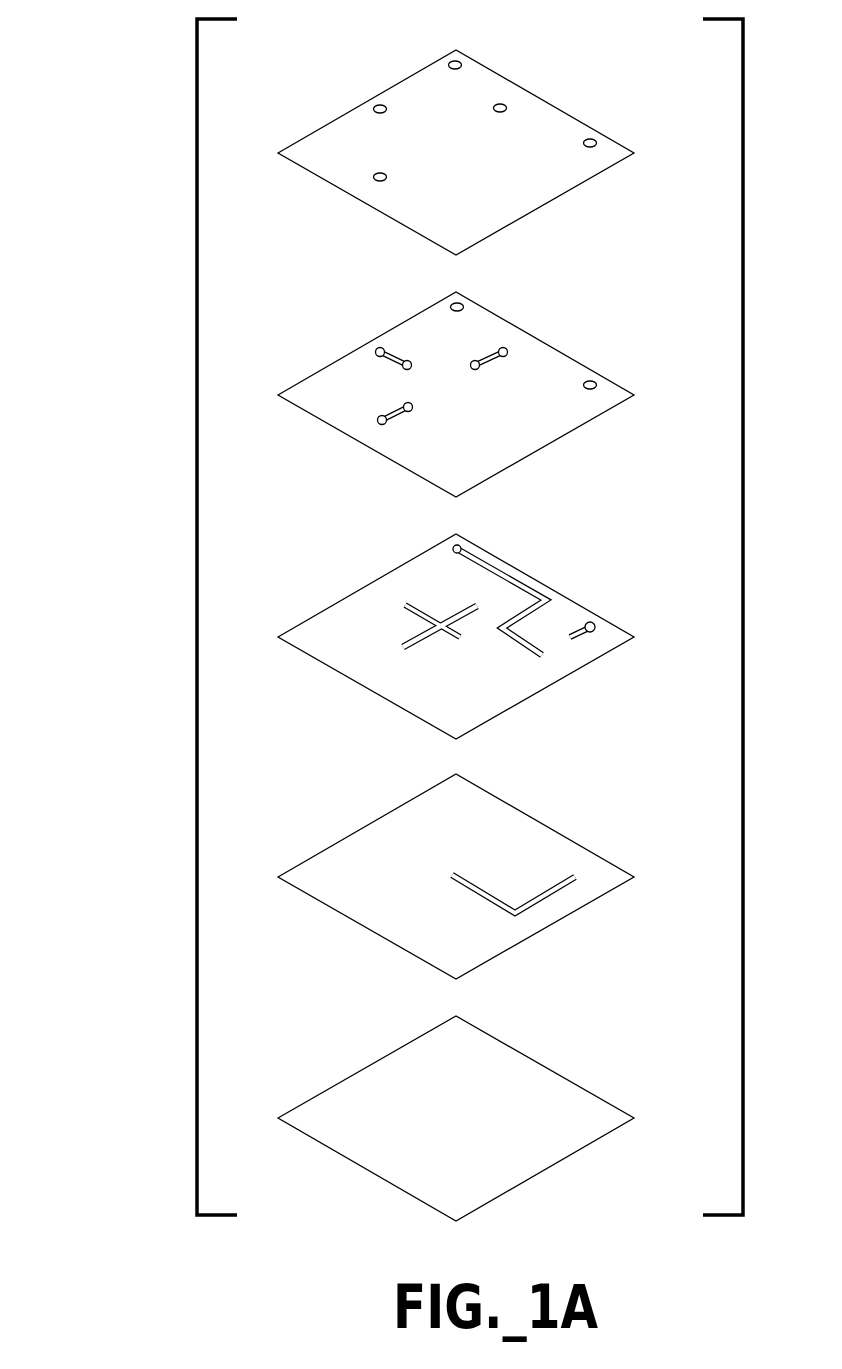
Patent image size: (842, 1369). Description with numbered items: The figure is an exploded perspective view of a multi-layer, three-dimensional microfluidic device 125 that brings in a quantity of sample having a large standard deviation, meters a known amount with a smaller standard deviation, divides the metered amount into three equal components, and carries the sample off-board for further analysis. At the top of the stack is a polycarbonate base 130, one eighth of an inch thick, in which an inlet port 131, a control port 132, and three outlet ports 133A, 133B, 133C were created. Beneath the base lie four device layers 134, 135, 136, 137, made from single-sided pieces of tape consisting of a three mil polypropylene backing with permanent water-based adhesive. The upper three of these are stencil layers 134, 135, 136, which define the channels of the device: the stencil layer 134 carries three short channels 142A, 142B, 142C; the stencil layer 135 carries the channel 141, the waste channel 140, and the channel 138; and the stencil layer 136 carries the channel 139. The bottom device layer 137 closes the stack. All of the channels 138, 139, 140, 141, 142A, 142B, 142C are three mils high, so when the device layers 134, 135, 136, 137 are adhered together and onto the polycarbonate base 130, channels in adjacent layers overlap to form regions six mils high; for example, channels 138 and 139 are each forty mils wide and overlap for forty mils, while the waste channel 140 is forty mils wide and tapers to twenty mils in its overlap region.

The microfluidic device 125 is at (186, 627).
The polycarbonate base 130 is at (610, 165).
The inlet port 131 is at (592, 139).
The control port 132 is at (449, 63).
The outlet port 133A is at (375, 175).
The outlet port 133B is at (375, 107).
The outlet port 133C is at (501, 104).
The stencil layer 134 is at (607, 412).
The stencil layer 135 is at (577, 672).
The stencil layer 136 is at (613, 890).
The device layer 137 is at (615, 1128).
The channel 138 is at (590, 622).
The channel 139 is at (538, 902).
The waste channel 140 is at (524, 589).
The channel 141 is at (417, 636).
The channel 142A is at (386, 416).
The channel 142B is at (380, 348).
The channel 142C is at (504, 348).